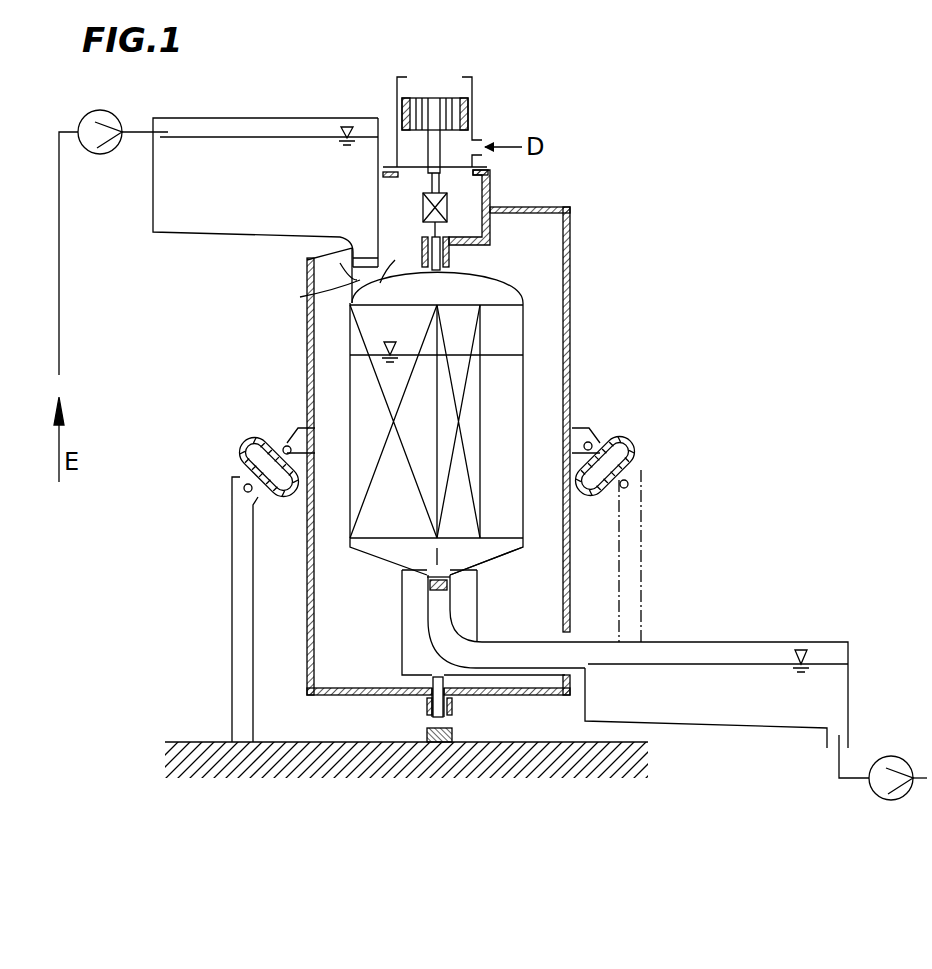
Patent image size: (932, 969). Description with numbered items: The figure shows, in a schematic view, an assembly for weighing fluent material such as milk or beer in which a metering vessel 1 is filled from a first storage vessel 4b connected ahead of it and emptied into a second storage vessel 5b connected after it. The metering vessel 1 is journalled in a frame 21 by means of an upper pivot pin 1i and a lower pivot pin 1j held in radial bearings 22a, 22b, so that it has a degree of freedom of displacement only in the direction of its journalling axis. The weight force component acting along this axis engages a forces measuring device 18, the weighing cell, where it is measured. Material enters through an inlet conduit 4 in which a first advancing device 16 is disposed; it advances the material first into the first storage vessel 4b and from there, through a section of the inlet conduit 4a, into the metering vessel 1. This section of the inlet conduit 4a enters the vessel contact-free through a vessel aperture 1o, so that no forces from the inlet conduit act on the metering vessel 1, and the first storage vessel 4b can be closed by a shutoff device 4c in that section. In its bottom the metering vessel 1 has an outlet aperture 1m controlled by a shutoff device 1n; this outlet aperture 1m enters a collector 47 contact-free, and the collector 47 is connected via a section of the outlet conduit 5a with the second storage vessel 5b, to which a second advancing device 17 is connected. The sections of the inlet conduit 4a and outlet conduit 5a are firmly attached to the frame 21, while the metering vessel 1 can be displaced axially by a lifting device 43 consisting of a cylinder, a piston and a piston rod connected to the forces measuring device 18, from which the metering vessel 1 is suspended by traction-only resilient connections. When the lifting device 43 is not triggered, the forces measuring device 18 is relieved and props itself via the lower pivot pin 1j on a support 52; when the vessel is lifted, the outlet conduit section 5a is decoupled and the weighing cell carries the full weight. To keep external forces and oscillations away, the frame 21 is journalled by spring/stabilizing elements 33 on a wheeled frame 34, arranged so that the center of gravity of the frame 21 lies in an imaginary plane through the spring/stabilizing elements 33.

The metering vessel 1 is at (523, 368).
The upper pivot pin 1i is at (490, 232).
The lower pivot pin 1j is at (432, 697).
The outlet aperture 1m is at (480, 562).
The shutoff device 1n is at (427, 590).
The vessel aperture 1o is at (305, 297).
The inlet conduit 4 is at (59, 258).
The section of the inlet conduit 4a is at (307, 275).
The first storage vessel 4b is at (248, 117).
The shutoff device 4c is at (365, 252).
The section of the outlet conduit 5a is at (524, 627).
The second storage vessel 5b is at (655, 703).
The first advancing device 16 is at (98, 112).
The second advancing device 17 is at (870, 786).
The forces measuring device 18 is at (447, 210).
The frame 21 is at (570, 312).
The radial bearing 22a is at (452, 703).
The radial bearing 22b is at (449, 266).
The spring/stabilizing elements 33 is at (245, 455).
The wheeled frame 34 is at (238, 735).
The lifting device 43 is at (484, 82).
The collector 47 is at (460, 612).
The support 52 is at (425, 743).